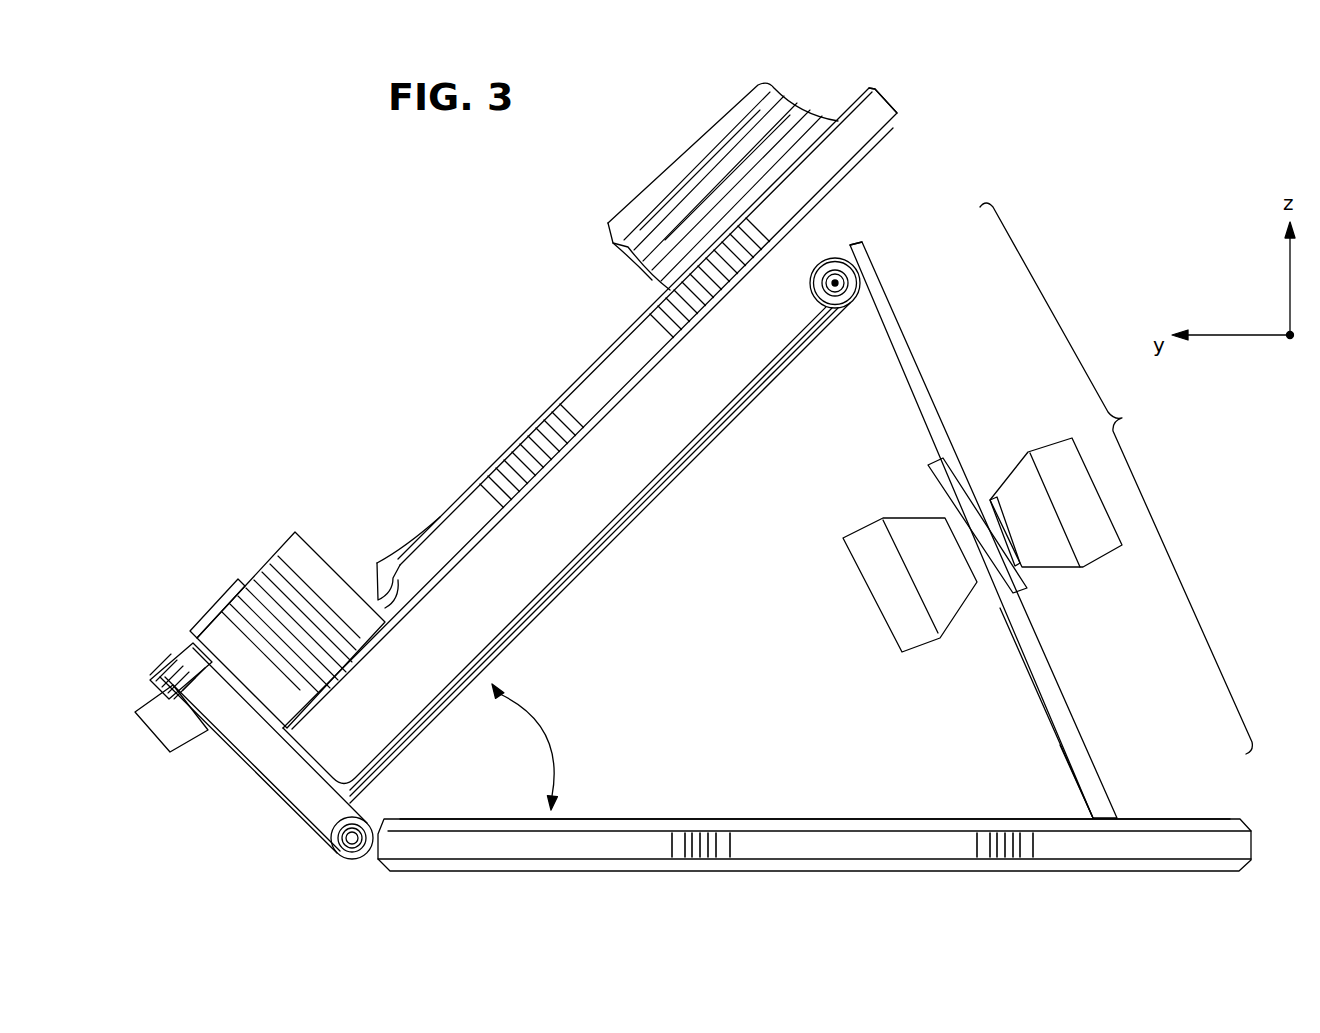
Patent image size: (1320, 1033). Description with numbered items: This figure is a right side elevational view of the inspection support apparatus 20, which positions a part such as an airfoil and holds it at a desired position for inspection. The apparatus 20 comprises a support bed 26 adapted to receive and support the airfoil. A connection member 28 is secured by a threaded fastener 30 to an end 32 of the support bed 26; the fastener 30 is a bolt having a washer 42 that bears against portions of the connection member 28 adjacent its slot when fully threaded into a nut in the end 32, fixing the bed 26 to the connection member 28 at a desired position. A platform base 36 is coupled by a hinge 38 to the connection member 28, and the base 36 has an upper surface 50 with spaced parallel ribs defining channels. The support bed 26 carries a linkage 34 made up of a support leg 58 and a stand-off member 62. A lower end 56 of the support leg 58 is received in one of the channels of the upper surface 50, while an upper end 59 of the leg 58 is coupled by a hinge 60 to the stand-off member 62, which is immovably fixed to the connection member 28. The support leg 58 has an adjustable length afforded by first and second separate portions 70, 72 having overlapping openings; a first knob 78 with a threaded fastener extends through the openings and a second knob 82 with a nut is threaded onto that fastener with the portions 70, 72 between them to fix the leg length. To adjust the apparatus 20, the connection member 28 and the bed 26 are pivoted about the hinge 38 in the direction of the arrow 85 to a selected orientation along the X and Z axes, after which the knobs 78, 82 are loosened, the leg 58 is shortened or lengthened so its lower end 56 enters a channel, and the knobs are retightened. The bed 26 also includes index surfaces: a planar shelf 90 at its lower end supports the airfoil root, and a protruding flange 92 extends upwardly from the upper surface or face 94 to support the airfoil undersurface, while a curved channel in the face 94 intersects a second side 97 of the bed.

The inspection support apparatus 20 is at (362, 308).
The support bed 26 is at (433, 523).
The connection member 28 is at (272, 748).
The threaded fastener 30 is at (158, 698).
The end 32 is at (275, 582).
The linkage 34 is at (912, 150).
The platform base 36 is at (556, 848).
The hinge 38 is at (355, 858).
The washer 42 is at (210, 738).
The upper surface 50 is at (418, 815).
The lower end 56 is at (1092, 762).
The support leg 58 is at (1116, 478).
The upper end 59 is at (872, 262).
The hinge 60 is at (836, 280).
The stand-off member 62 is at (788, 370).
The first portion 70 is at (898, 300).
The second portion 72 is at (1058, 680).
The first knob 78 is at (1055, 462).
The second knob 82 is at (920, 640).
The arrow 85 is at (545, 735).
The shelf 90 is at (357, 597).
The protruding flange 92 is at (722, 135).
The upper surface or face 94 is at (598, 357).
The second side 97 is at (578, 412).